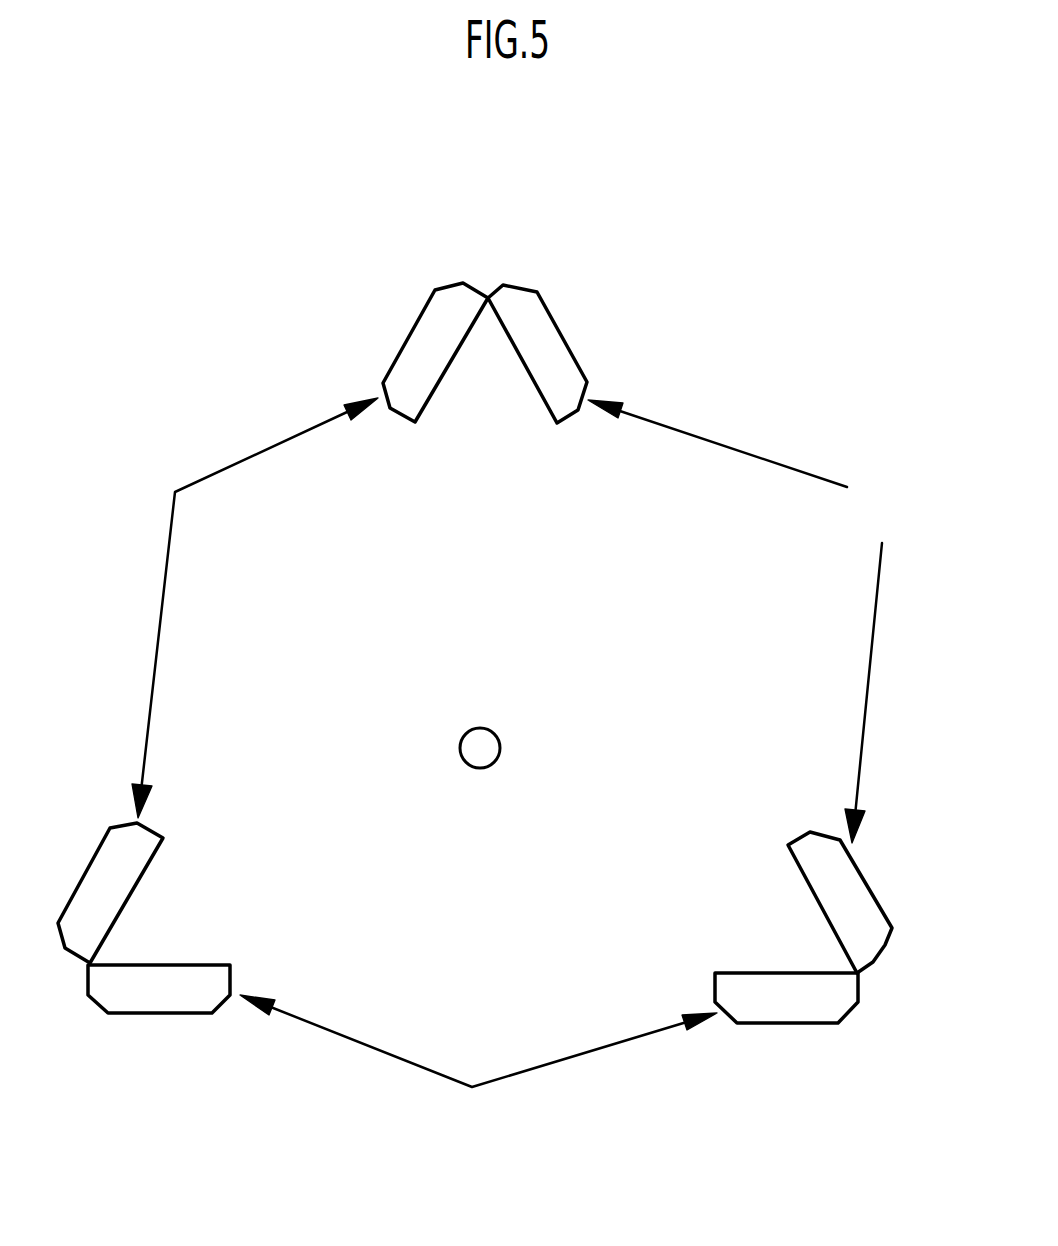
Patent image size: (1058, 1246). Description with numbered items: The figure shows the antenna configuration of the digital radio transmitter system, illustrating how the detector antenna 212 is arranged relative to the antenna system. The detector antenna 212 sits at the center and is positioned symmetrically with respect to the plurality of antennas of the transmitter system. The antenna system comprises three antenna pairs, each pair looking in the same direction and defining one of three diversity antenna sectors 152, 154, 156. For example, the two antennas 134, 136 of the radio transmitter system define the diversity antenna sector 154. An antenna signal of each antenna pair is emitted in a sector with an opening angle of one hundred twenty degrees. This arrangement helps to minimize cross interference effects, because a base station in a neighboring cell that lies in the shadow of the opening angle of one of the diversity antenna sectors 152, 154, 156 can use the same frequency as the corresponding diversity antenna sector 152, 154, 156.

The antenna 134 is at (545, 333).
The antenna 136 is at (855, 927).
The diversity antenna sector 152 is at (245, 608).
The diversity antenna sector 154 is at (745, 621).
The diversity antenna sector 156 is at (478, 1066).
The detector antenna 212 is at (487, 765).